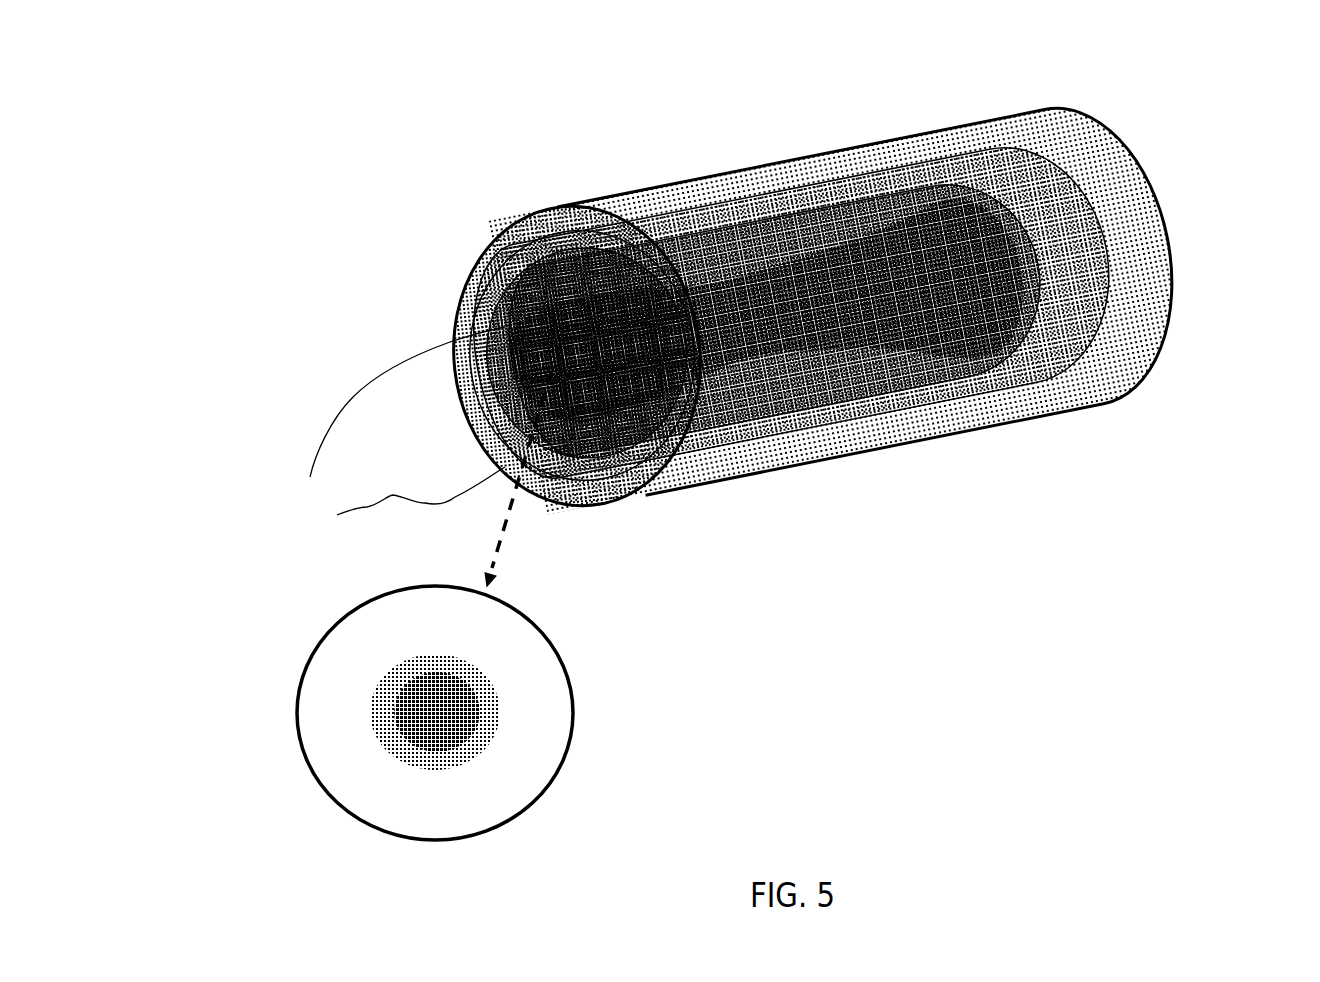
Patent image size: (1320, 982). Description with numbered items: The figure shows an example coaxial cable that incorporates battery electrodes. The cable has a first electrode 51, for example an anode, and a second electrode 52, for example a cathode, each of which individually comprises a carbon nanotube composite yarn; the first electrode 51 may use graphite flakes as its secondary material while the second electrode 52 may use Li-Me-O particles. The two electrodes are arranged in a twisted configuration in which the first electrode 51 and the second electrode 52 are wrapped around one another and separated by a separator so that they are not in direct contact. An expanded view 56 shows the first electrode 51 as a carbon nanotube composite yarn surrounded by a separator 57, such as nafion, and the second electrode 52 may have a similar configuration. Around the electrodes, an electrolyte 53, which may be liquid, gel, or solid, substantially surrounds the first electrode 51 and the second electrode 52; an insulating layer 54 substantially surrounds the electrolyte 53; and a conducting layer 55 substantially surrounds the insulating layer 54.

The first electrode 51 is at (543, 357).
The second electrode 52 is at (575, 310).
The electrolyte 53 is at (1020, 269).
The insulating layer 54 is at (1048, 202).
The conducting layer 55 is at (940, 423).
The expanded view 56 is at (241, 694).
The separator 57 is at (487, 737).